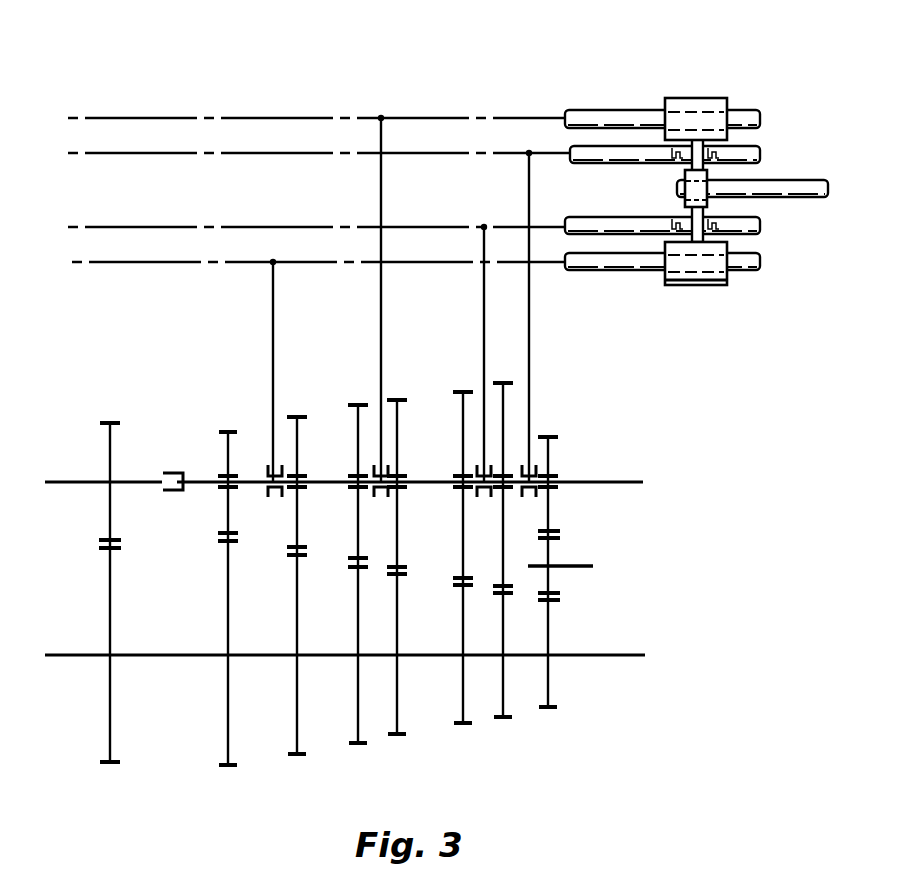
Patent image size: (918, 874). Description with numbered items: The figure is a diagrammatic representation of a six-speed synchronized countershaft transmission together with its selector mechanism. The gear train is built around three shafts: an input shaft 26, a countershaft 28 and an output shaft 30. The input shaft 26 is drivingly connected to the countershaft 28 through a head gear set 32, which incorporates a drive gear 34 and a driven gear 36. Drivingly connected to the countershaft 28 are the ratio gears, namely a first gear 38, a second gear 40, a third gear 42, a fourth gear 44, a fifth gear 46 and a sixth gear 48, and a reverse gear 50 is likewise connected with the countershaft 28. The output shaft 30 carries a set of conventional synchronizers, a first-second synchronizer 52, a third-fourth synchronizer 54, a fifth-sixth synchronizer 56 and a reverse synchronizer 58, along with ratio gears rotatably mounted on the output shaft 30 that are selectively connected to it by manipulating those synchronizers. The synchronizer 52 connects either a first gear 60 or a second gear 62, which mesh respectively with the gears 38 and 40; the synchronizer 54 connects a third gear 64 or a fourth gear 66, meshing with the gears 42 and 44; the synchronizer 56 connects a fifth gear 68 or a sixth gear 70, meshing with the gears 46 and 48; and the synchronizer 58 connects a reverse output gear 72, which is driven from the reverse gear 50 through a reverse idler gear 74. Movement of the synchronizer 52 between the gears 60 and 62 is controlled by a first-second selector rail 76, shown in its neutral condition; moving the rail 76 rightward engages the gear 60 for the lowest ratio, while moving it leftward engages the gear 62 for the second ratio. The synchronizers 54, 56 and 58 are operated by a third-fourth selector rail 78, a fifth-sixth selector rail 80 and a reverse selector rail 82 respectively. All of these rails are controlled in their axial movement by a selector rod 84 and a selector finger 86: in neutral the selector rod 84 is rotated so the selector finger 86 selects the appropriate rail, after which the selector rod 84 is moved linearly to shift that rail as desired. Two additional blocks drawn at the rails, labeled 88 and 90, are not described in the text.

The input shaft 26 is at (48, 480).
The countershaft 28 is at (62, 660).
The output shaft 30 is at (606, 480).
The head gear set 32 is at (118, 467).
The drive gear 34 is at (110, 512).
The driven gear 36 is at (113, 608).
The first gear 38 is at (503, 719).
The second gear 40 is at (463, 725).
The third gear 42 is at (397, 736).
The fourth gear 44 is at (358, 745).
The fifth gear 46 is at (296, 757).
The sixth gear 48 is at (224, 768).
The reverse gear 50 is at (550, 692).
The 1-2 synchronizer 52 is at (487, 498).
The 3-4 synchronizer 54 is at (385, 497).
The 5-6 synchronizer 56 is at (274, 500).
The reverse synchronizer 58 is at (532, 498).
The first gear 60 is at (513, 383).
The second gear 62 is at (458, 393).
The third gear 64 is at (403, 403).
The fourth gear 66 is at (355, 404).
The fifth gear 68 is at (300, 418).
The sixth gear 70 is at (222, 432).
The reverse output gear 72 is at (553, 447).
The reverse idler gear 74 is at (553, 545).
The 1-2 selector rail 76 is at (595, 236).
The 3-4 selector rail 78 is at (600, 113).
The 5-6 selector rail 80 is at (627, 271).
The reverse selector rail 82 is at (620, 148).
The selector rod 84 is at (795, 181).
The selector finger 86 is at (693, 220).
The interlock block 88 is at (705, 100).
The interlock block 90 is at (714, 282).